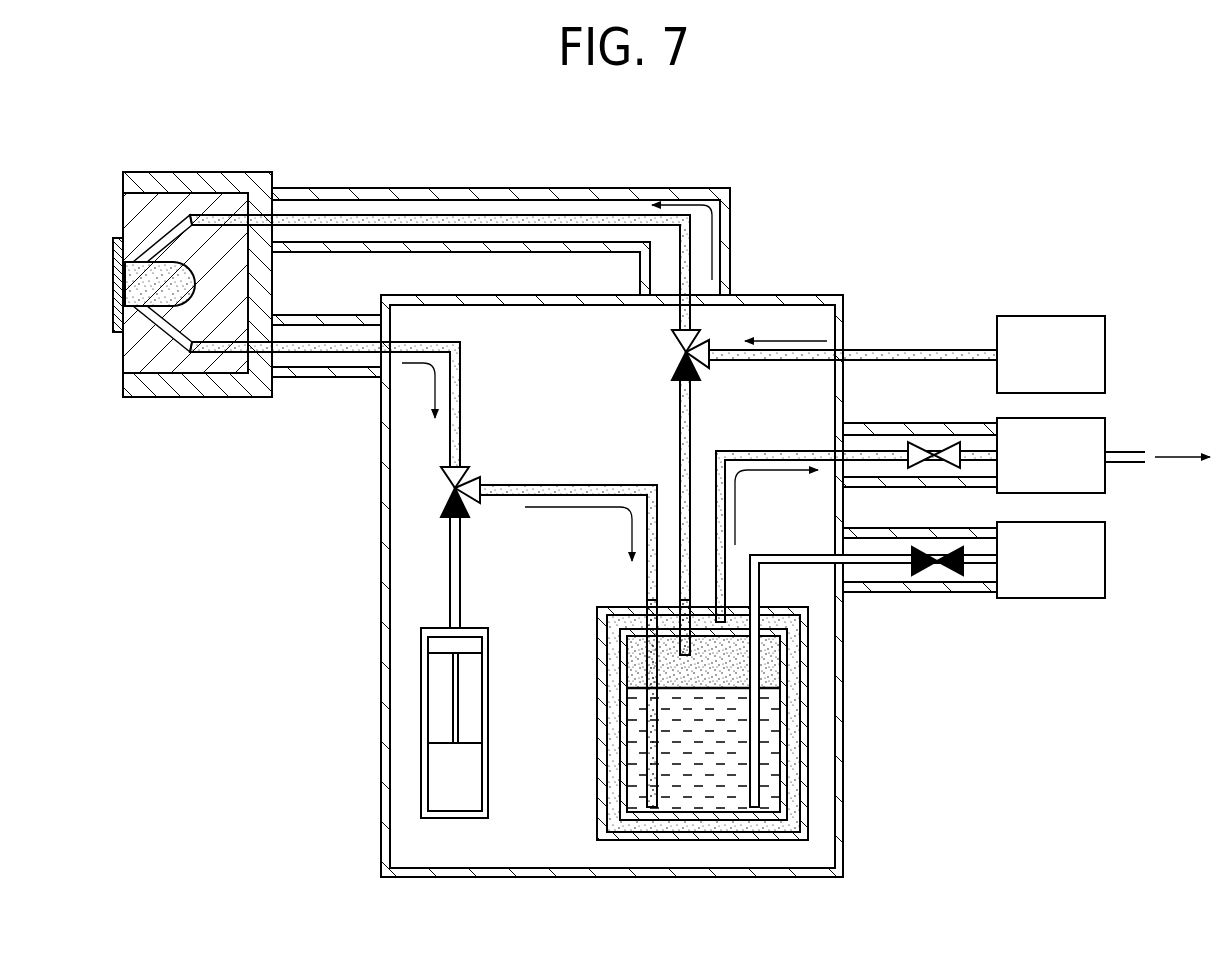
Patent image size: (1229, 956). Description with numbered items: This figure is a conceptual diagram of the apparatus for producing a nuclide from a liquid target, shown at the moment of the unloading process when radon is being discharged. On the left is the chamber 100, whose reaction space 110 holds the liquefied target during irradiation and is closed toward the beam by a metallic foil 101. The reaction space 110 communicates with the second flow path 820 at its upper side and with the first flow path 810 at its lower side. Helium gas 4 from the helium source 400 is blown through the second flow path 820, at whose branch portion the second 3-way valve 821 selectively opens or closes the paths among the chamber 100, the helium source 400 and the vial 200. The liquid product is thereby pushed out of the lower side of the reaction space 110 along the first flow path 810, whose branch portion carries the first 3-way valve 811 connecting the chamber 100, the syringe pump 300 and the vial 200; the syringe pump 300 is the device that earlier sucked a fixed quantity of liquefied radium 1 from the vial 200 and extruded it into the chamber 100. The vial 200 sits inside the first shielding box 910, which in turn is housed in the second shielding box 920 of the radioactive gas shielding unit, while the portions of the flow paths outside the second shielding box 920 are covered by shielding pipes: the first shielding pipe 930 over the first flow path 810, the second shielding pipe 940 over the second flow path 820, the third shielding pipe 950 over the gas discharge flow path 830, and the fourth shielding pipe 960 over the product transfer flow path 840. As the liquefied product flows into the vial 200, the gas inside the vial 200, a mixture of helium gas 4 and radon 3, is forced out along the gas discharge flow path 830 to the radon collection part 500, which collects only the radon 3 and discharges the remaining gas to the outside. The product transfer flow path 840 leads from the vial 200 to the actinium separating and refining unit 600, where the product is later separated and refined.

The chamber 100 is at (226, 172).
The reaction space 110 is at (140, 282).
The foil 101 is at (113, 318).
The helium gas 4 is at (416, 217).
The second flow path 820 is at (526, 217).
The second shielding pipe 940 is at (672, 188).
The first shielding pipe 930 is at (320, 378).
The second 3-way valve 821 is at (712, 330).
The first 3-way valve 811 is at (425, 489).
The first flow path 810 is at (450, 565).
The syringe pump 300 is at (421, 765).
The second shielding box 920 is at (843, 795).
The first shielding box 910 is at (808, 754).
The vial 200 is at (787, 692).
The radon 3 is at (730, 656).
The liquefied radium 1 is at (707, 790).
The gas discharge flow path 830 is at (786, 450).
The third shielding pipe 950 is at (915, 423).
The product transfer flow path 840 is at (785, 555).
The fourth shielding pipe 960 is at (920, 595).
The helium source 400 is at (1105, 355).
The radon collection part 500 is at (1105, 430).
The actinium separating and refining unit 600 is at (1105, 558).